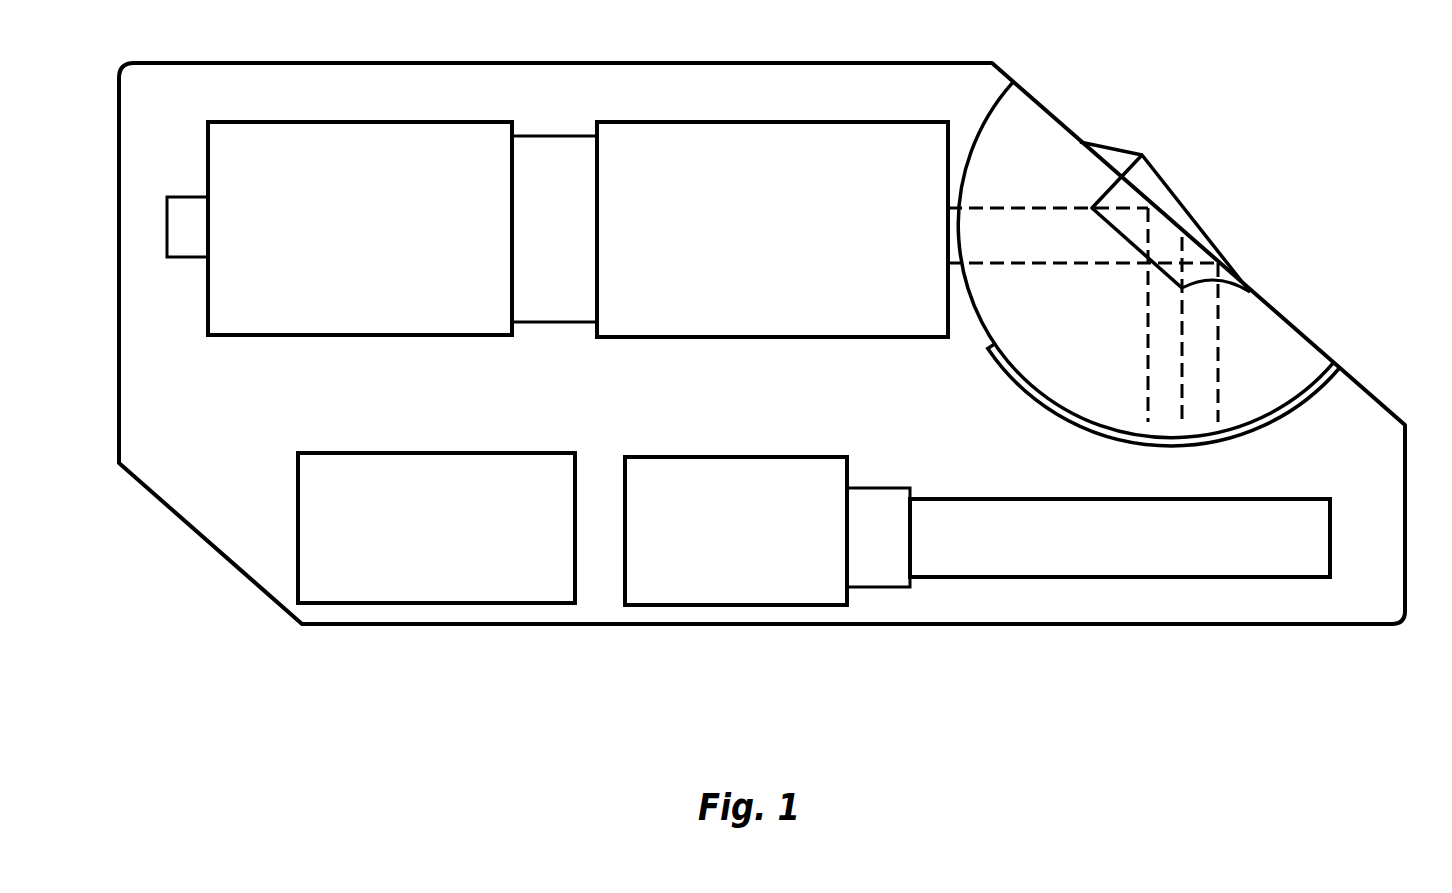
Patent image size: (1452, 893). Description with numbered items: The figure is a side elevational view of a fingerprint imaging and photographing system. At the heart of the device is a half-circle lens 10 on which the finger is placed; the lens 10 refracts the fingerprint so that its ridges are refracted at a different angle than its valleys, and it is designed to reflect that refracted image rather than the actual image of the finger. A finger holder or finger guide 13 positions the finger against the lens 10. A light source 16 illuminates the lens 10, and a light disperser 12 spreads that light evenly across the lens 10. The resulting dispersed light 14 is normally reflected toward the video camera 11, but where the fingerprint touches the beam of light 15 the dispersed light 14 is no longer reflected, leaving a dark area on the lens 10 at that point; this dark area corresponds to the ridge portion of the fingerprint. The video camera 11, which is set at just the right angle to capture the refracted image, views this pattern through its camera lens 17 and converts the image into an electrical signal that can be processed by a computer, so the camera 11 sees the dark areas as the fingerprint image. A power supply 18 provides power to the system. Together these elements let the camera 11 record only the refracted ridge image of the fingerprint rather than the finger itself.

The lens 10 is at (1028, 157).
The video camera 11 is at (305, 130).
The light disperser 12 is at (1315, 390).
The finger holder 13 is at (1143, 153).
The dispersed light 14 is at (1148, 383).
The beam of light 15 is at (1182, 352).
The light source 16 is at (1240, 560).
The camera lens 17 is at (692, 135).
The power supply 18 is at (340, 577).